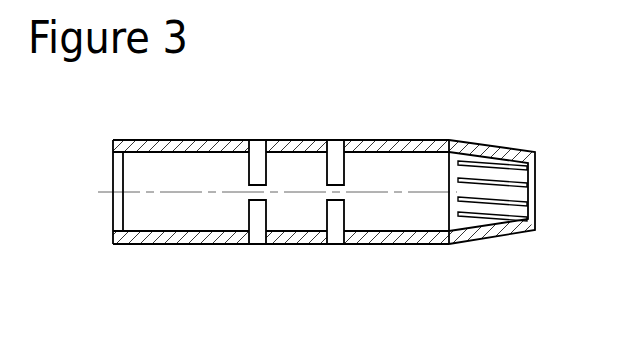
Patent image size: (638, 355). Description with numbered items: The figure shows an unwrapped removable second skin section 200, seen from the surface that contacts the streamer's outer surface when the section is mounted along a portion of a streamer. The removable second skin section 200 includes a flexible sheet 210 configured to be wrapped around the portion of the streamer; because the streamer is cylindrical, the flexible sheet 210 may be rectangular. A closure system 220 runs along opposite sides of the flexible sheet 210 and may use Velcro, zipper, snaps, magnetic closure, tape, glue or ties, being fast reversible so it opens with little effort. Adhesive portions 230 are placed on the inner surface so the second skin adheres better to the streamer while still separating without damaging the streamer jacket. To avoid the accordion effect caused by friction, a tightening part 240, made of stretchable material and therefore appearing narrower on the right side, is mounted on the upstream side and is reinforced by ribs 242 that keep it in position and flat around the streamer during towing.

The removable second skin section 200 is at (320, 86).
The flexible sheet 210 is at (138, 220).
The closure system 220 is at (416, 148).
The adhesive portions 230 is at (333, 227).
The tightening part 240 is at (483, 192).
The ribs 242 is at (487, 220).